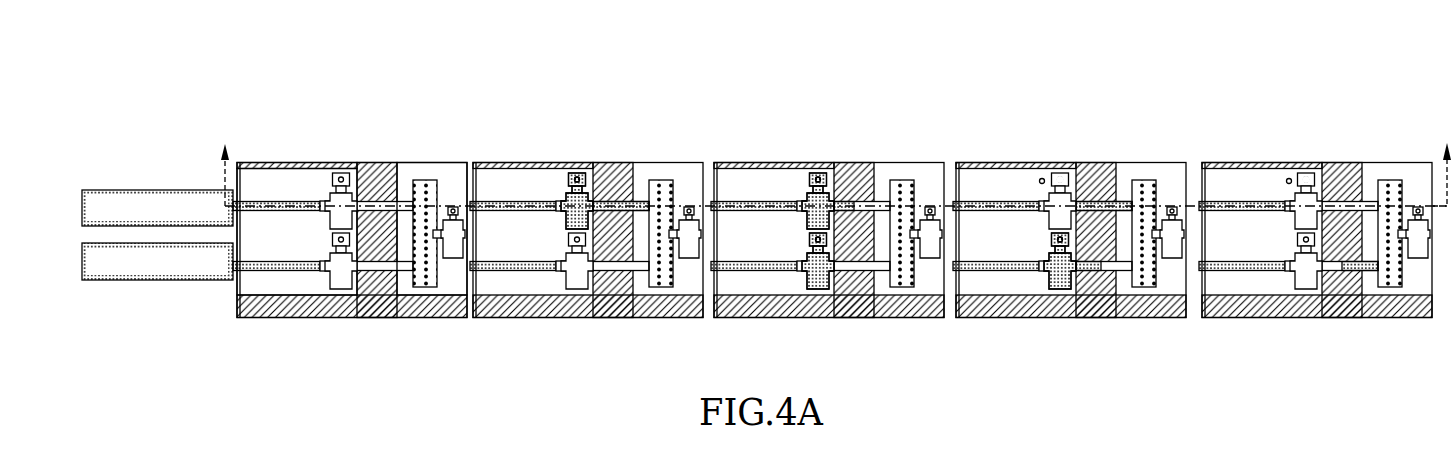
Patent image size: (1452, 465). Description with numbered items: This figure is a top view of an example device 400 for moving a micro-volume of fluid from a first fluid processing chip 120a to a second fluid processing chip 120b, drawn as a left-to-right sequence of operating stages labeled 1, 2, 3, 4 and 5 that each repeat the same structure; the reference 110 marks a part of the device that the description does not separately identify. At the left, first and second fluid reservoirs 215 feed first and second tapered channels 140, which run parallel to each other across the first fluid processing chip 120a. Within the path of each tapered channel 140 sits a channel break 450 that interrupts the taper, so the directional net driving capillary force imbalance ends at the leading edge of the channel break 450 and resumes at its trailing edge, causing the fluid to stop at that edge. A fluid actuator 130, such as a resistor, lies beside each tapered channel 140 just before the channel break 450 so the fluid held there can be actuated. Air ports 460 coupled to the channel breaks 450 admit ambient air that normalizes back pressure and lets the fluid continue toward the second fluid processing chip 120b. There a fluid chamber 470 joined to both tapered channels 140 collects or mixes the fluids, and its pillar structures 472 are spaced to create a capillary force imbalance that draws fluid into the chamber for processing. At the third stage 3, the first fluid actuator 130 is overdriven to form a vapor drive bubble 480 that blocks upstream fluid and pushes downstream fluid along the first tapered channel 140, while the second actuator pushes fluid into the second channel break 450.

The device 400 is at (181, 62).
The fluid reservoirs 215 is at (160, 189).
The microfluidic device / module 110 is at (458, 172).
The first fluid processing chip 120a is at (267, 175).
The second fluid processing chip 120b is at (467, 165).
The fluid actuators 130 is at (327, 200).
The tapered channels 140 is at (284, 211).
The channel breaks 450 is at (367, 178).
The air ports 460 is at (340, 172).
The fluid chamber 470 is at (400, 290).
The pillar structures 472 is at (418, 290).
The vapor drive bubble 480 is at (828, 198).
The module 1 is at (382, 223).
The module 2 is at (586, 222).
The third stage of operation 3 is at (827, 223).
The module 4 is at (1069, 223).
The module 5 is at (1315, 222).